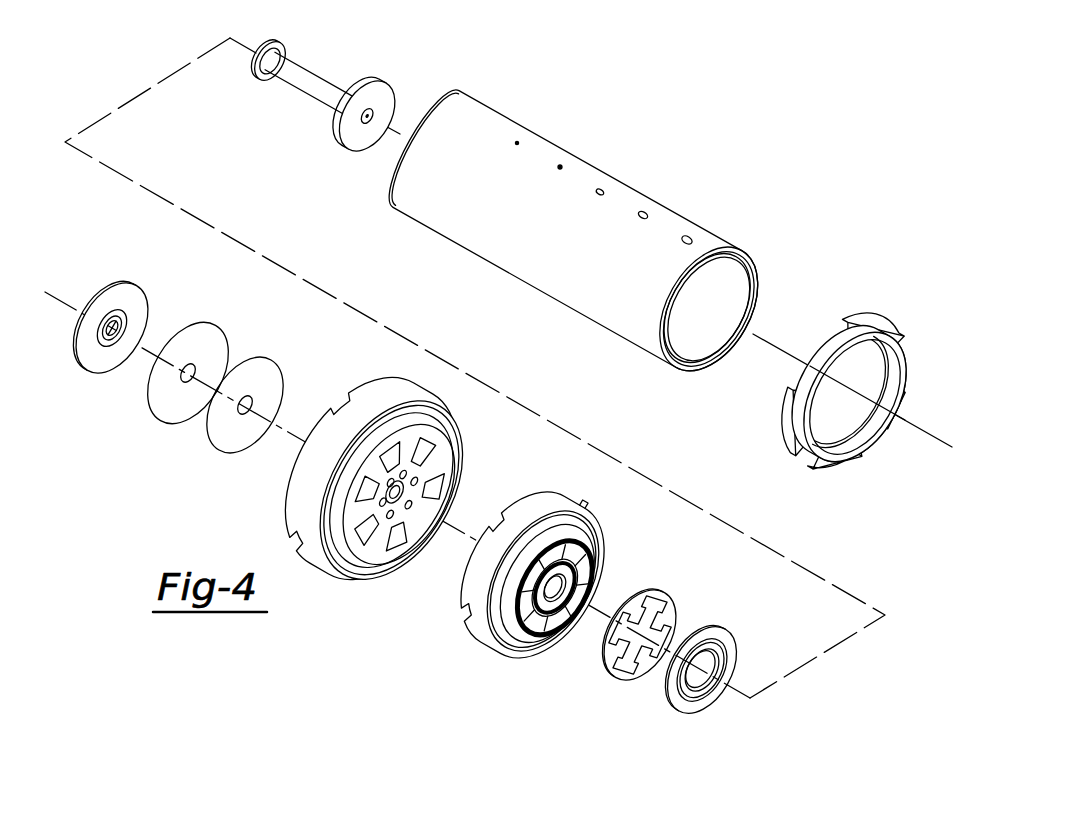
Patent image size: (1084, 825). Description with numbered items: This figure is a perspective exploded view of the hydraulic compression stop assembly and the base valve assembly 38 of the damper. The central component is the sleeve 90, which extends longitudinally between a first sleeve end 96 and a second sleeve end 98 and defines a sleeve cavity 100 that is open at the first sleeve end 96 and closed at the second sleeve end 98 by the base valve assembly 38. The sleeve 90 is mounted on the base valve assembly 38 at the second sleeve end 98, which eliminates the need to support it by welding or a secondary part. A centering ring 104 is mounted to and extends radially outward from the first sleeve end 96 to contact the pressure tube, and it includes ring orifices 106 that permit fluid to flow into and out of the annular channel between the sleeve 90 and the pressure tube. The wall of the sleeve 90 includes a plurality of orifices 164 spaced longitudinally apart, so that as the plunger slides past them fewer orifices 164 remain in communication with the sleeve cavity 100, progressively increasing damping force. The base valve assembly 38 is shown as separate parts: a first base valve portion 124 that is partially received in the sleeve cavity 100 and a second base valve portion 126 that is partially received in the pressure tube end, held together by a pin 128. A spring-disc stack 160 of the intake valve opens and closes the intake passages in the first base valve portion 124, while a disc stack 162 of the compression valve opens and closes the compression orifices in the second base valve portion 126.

The base valve assembly 38 is at (360, 608).
The sleeve 90 is at (662, 285).
The first sleeve end 96 is at (752, 262).
The second sleeve end 98 is at (392, 170).
The sleeve cavity 100 is at (699, 349).
The centering ring 104 is at (863, 399).
The ring orifices 106 is at (811, 337).
The first base valve portion 124 is at (470, 575).
The second base valve portion 126 is at (301, 512).
The pin 128 is at (316, 77).
The spring-disc stack 160 is at (673, 638).
The disc stack 162 is at (181, 367).
The orifices 164 is at (560, 166).